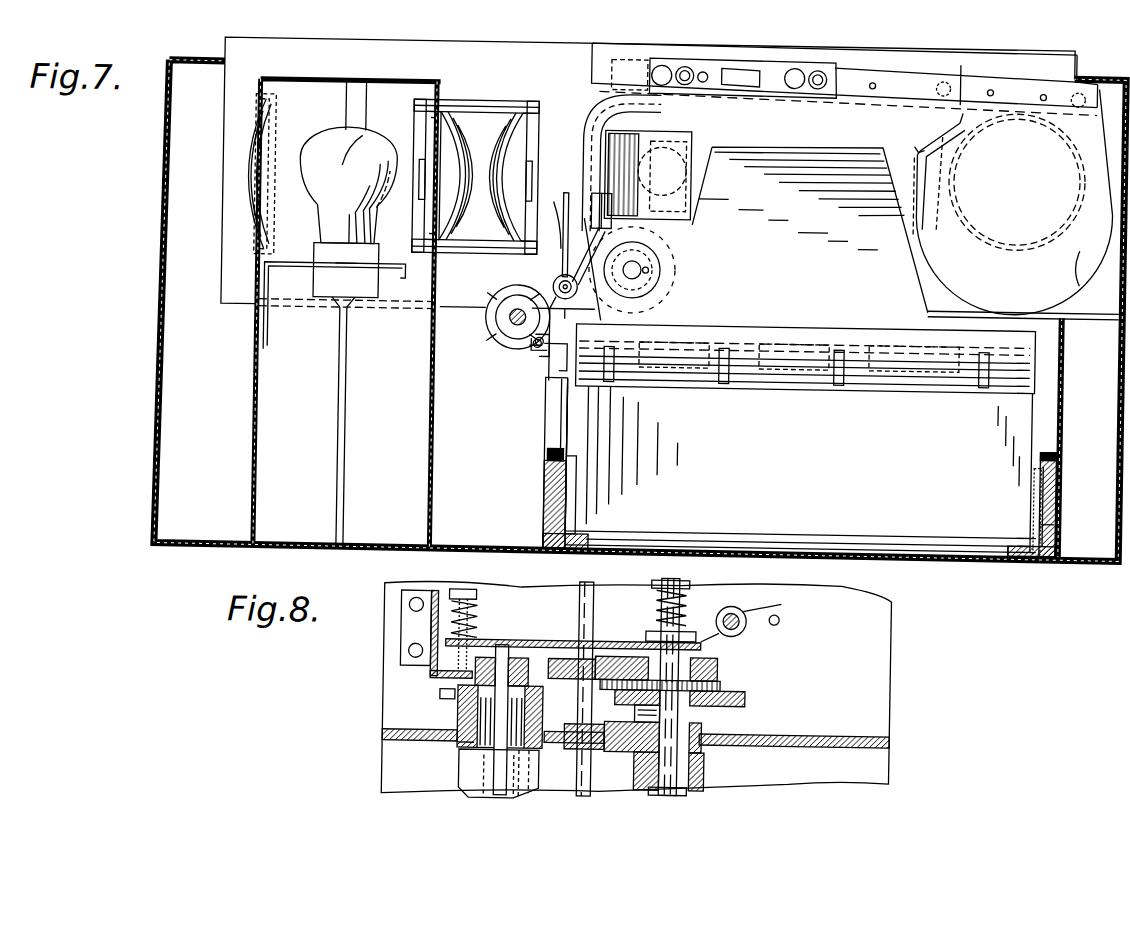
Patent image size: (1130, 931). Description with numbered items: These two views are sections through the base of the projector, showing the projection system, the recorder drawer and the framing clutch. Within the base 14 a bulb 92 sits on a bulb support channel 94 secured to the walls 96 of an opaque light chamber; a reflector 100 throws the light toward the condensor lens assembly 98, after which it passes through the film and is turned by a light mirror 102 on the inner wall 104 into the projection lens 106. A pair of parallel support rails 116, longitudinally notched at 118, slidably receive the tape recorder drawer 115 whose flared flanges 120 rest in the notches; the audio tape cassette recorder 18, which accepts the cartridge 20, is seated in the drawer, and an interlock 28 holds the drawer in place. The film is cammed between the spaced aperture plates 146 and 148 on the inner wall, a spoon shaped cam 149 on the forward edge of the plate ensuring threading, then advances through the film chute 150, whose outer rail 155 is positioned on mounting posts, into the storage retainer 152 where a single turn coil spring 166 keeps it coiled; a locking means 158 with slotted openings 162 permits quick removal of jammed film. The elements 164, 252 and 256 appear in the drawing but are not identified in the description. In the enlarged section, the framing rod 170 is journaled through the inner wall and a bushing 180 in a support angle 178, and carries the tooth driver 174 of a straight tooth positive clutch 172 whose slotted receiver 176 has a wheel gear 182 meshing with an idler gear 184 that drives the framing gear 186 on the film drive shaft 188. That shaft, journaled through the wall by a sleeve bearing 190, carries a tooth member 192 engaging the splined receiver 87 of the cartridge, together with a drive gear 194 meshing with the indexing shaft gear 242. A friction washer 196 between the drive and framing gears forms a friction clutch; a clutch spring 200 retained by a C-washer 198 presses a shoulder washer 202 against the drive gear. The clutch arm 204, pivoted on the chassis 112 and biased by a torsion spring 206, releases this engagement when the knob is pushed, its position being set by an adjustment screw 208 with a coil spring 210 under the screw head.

In FIG. 7, the base 14 is at (924, 556).
In FIG. 7, the audio tape cassette recorder 18 is at (799, 469).
In FIG. 7, the cartridge 20 is at (757, 234).
In FIG. 7, the interlock 28 is at (571, 413).
In FIG. 7, the splined receiver 87 is at (657, 262).
In FIG. 7, the bulb 92 is at (366, 135).
In FIG. 7, the bulb support channel 94 is at (269, 336).
In FIG. 7, the walls of opaque light chamber 96 is at (259, 405).
In FIG. 7, the condensor lens assembly 98 is at (479, 135).
In FIG. 7, the reflector 100 is at (248, 207).
In FIG. 7, the light mirror 102 is at (688, 151).
In FIG. 7, the inner wall 104 is at (558, 80).
In FIG. 8, the inner wall 104 is at (782, 741).
In FIG. 7, the projection lens 106 is at (667, 147).
In FIG. 8, the chassis 112 is at (876, 680).
In FIG. 7, the tape recorder drawer 115 is at (990, 552).
In FIG. 7, the support rails 116 is at (547, 490).
In FIG. 7, the notches 118 is at (550, 457).
In FIG. 7, the flanges 120 is at (574, 454).
In FIG. 7, the operative plate 146 is at (582, 101).
In FIG. 7, the operative plate 148 is at (612, 106).
In FIG. 7, the spoon shaped cam 149 is at (588, 240).
In FIG. 7, the film chute 150 is at (1012, 56).
In FIG. 7, the storage retainer 152 is at (1083, 246).
In FIG. 7, the outer rail 155 is at (908, 73).
In FIG. 7, the locking means 158 is at (600, 43).
In FIG. 7, the slotted openings 162 is at (664, 67).
In FIG. 7, the drum compartment 164 is at (1017, 203).
In FIG. 7, the coil spring 166 is at (1068, 215).
In FIG. 7, the framing rod 170 is at (498, 338).
In FIG. 8, the framing rod 170 is at (478, 794).
In FIG. 8, the straight tooth positive clutch 172 is at (446, 722).
In FIG. 7, the tooth driver 174 is at (518, 348).
In FIG. 8, the tooth driver 174 is at (478, 771).
In FIG. 8, the slotted receiver 176 is at (460, 742).
In FIG. 8, the support angle 178 is at (400, 629).
In FIG. 8, the bushing 180 is at (445, 681).
In FIG. 8, the wheel gear 182 is at (442, 696).
In FIG. 8, the idler gear 184 is at (532, 780).
In FIG. 8, the framing gear 186 is at (732, 702).
In FIG. 8, the film drive shaft 188 is at (684, 797).
In FIG. 8, the sleeve bearing 190 is at (705, 729).
In FIG. 7, the tooth member 192 is at (648, 270).
In FIG. 8, the drive gear 194 is at (720, 667).
In FIG. 8, the friction washer 196 is at (725, 689).
In FIG. 8, the C-washer 198 is at (684, 583).
In FIG. 8, the clutch spring 200 is at (690, 604).
In FIG. 8, the shoulder washer 202 is at (658, 636).
In FIG. 8, the clutch arm 204 is at (486, 642).
In FIG. 8, the torsion spring 206 is at (744, 610).
In FIG. 8, the adjustment screw 208 is at (450, 597).
In FIG. 8, the coil spring 210 is at (480, 607).
In FIG. 8, the indexing shaft gear 242 is at (575, 652).
In FIG. 7, the pivot pin 252 is at (553, 283).
In FIG. 7, the actuator arm 256 is at (562, 203).